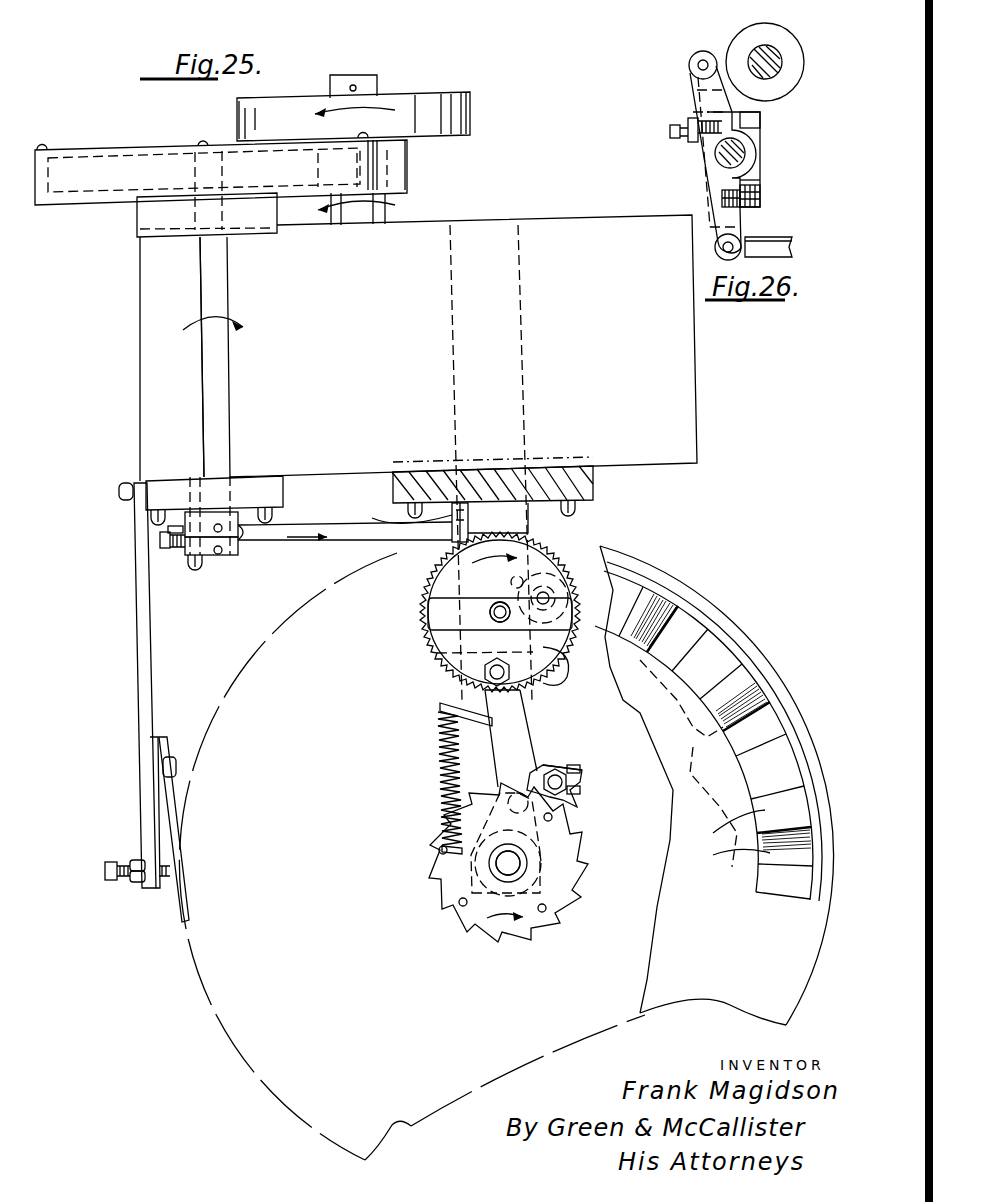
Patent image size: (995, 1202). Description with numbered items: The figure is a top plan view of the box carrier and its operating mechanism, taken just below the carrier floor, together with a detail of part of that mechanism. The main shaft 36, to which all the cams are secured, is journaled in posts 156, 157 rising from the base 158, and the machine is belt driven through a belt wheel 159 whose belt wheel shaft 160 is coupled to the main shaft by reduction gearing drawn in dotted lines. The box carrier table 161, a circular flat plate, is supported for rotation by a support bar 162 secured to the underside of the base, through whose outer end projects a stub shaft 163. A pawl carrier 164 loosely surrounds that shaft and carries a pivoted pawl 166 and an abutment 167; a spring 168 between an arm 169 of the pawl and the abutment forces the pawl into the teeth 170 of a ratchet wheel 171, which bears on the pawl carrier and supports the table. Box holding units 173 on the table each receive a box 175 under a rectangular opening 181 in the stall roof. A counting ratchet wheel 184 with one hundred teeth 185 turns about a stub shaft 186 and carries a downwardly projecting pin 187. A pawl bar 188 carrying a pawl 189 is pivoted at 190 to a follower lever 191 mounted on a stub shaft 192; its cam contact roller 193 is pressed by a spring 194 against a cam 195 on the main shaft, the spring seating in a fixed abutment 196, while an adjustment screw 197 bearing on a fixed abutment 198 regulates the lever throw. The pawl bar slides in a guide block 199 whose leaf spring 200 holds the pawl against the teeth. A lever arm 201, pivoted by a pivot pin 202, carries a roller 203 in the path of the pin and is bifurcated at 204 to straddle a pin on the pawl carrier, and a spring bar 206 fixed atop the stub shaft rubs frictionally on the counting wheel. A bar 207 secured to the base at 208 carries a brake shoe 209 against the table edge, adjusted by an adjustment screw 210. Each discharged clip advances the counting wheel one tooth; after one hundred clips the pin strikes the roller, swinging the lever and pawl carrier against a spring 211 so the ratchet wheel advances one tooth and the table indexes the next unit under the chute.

In FIG. 25, the main shaft 36 is at (222, 401).
In FIG. 25, the post 156 is at (180, 224).
In FIG. 25, the post 157 is at (182, 503).
In FIG. 25, the base 158 is at (375, 403).
In FIG. 25, the belt wheel 159 is at (427, 96).
In FIG. 25, the belt wheel shaft 160 is at (346, 80).
In FIG. 25, the box carrier table 161 is at (298, 949).
In FIG. 25, the support bar 162 is at (537, 713).
In FIG. 25, the stub shaft 163 is at (497, 866).
In FIG. 25, the pawl carrier 164 is at (577, 806).
In FIG. 25, the pawl 166 is at (560, 769).
In FIG. 25, the abutment 167 is at (581, 791).
In FIG. 25, the spring 168 is at (581, 779).
In FIG. 25, the arm 169 is at (571, 768).
In FIG. 25, the teeth 170 is at (572, 915).
In FIG. 25, the ratchet wheel 171 is at (590, 863).
In FIG. 25, the box holding unit 173 is at (737, 840).
In FIG. 25, the box 175 is at (720, 774).
In FIG. 25, the rectangular opening 181 is at (720, 675).
In FIG. 25, the ratchet wheel 184 is at (447, 676).
In FIG. 25, the teeth 185 is at (545, 684).
In FIG. 25, the stub shaft 186 is at (493, 607).
In FIG. 25, the pin 187 is at (511, 582).
In FIG. 25, the pawl bar 188 is at (345, 549).
In FIG. 26, the pawl bar 188 is at (781, 236).
In FIG. 25, the pawl 189 is at (472, 535).
In FIG. 26, the pivotal connection 190 is at (722, 256).
In FIG. 26, the follower lever 191 is at (737, 240).
In FIG. 26, the stub shaft 192 is at (745, 150).
In FIG. 25, the cam contact roller 193 is at (157, 549).
In FIG. 26, the cam contact roller 193 is at (689, 57).
In FIG. 26, the spring 194 is at (764, 193).
In FIG. 25, the cam 195 is at (247, 547).
In FIG. 26, the cam 195 is at (738, 39).
In FIG. 26, the fixed abutment 196 is at (760, 185).
In FIG. 26, the adjustment screw 197 is at (683, 122).
In FIG. 26, the fixed abutment 198 is at (760, 116).
In FIG. 25, the guide block 199 is at (450, 540).
In FIG. 25, the leaf spring 200 is at (396, 516).
In FIG. 25, the lever arm 201 is at (527, 756).
In FIG. 25, the pivot pin 202 is at (430, 651).
In FIG. 25, the roller 203 is at (563, 595).
In FIG. 25, the bifurcated end 204 is at (512, 844).
In FIG. 25, the spring bar 206 is at (437, 618).
In FIG. 25, the bar 207 is at (145, 667).
In FIG. 25, the securing point 208 is at (120, 498).
In FIG. 25, the brake shoe 209 is at (175, 908).
In FIG. 25, the adjustment screw 210 is at (122, 880).
In FIG. 25, the spring 211 is at (443, 780).